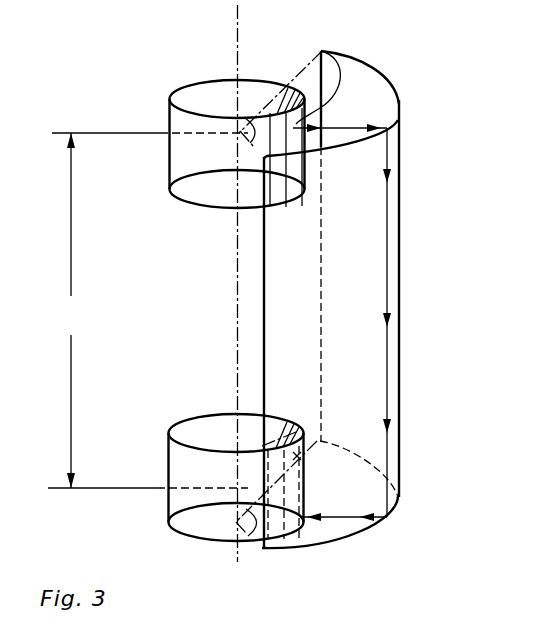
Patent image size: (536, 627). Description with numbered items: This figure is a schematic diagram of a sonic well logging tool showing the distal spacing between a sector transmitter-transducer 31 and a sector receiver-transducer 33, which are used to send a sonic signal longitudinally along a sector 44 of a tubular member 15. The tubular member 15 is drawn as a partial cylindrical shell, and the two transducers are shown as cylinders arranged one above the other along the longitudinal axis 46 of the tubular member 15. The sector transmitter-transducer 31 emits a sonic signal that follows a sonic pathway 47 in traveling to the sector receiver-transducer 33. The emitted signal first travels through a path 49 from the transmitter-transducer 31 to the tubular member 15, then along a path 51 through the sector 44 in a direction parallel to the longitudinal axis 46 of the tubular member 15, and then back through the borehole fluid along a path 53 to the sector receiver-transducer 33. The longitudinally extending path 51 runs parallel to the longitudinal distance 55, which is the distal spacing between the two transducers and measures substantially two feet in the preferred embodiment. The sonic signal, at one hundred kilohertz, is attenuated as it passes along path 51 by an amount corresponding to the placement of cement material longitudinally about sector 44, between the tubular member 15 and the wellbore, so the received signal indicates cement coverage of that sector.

The tubular member 15 is at (399, 198).
The sector transmitter-transducer 31 is at (324, 52).
The sector receiver-transducer 33 is at (300, 457).
The sector 44 is at (400, 113).
The longitudinal axis 46 is at (238, 62).
The sonic pathway 47 is at (389, 258).
The path 49 is at (371, 121).
The path 51 is at (389, 377).
The path 53 is at (380, 519).
The longitudinal distance 55 is at (104, 310).